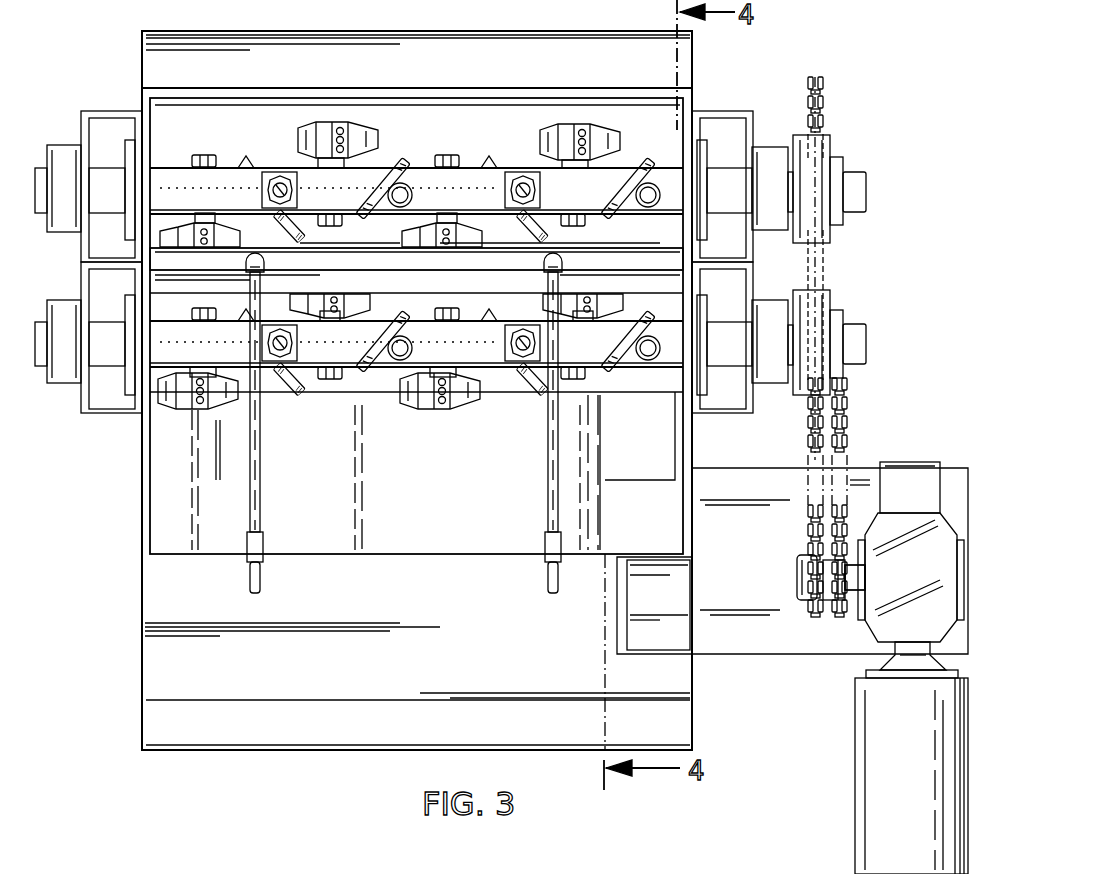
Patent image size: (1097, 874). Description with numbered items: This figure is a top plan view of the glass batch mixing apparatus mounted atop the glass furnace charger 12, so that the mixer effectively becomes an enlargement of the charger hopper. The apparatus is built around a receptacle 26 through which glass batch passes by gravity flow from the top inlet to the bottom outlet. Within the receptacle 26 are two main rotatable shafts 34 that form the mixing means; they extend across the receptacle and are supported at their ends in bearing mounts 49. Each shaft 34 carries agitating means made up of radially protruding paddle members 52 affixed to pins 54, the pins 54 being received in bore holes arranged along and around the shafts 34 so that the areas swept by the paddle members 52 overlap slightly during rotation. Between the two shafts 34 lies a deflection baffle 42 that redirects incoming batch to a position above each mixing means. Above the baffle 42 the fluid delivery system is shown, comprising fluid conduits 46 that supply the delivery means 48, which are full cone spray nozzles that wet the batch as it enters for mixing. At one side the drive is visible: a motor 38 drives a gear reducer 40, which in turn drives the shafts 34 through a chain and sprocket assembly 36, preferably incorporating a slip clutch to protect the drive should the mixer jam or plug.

The glass furnace charger 12 is at (533, 46).
The receptacle 26 is at (318, 556).
The rotatable shafts 34 is at (470, 188).
The chain and sprocket assembly 36 is at (818, 110).
The motor 38 is at (875, 768).
The gear reducer 40 is at (882, 622).
The deflection baffle 42 is at (622, 257).
The fluid conduits 46 is at (250, 578).
The delivery means 48 is at (258, 264).
The bearing mounts 49 is at (104, 134).
The paddle members 52 is at (372, 142).
The pins 54 is at (598, 142).